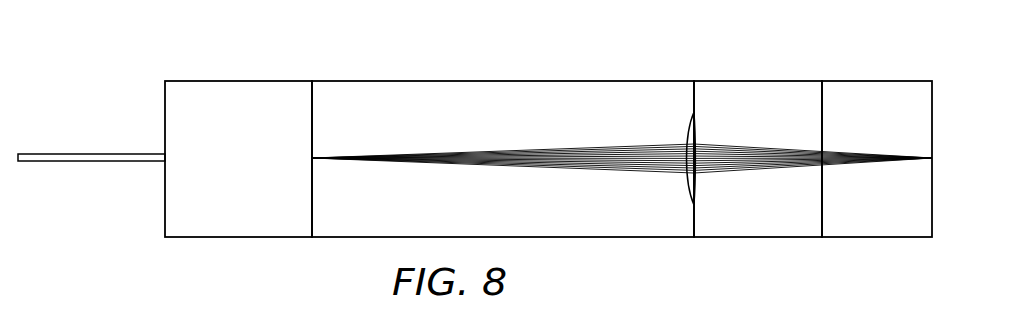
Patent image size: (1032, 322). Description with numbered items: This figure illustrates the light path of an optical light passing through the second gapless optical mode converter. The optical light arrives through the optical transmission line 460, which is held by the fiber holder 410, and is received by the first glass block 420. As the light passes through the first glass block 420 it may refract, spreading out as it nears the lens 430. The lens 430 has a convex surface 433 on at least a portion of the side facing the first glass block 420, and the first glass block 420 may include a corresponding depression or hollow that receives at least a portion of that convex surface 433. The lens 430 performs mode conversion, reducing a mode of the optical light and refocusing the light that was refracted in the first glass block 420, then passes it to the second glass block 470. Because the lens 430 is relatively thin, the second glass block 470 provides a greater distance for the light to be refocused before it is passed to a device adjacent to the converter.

The fiber holder 410 is at (202, 80).
The first glass block 420 is at (425, 80).
The lens 430 is at (720, 80).
The convex surface 433 is at (687, 128).
The optical transmission line 460 is at (60, 152).
The second glass block 470 is at (853, 80).